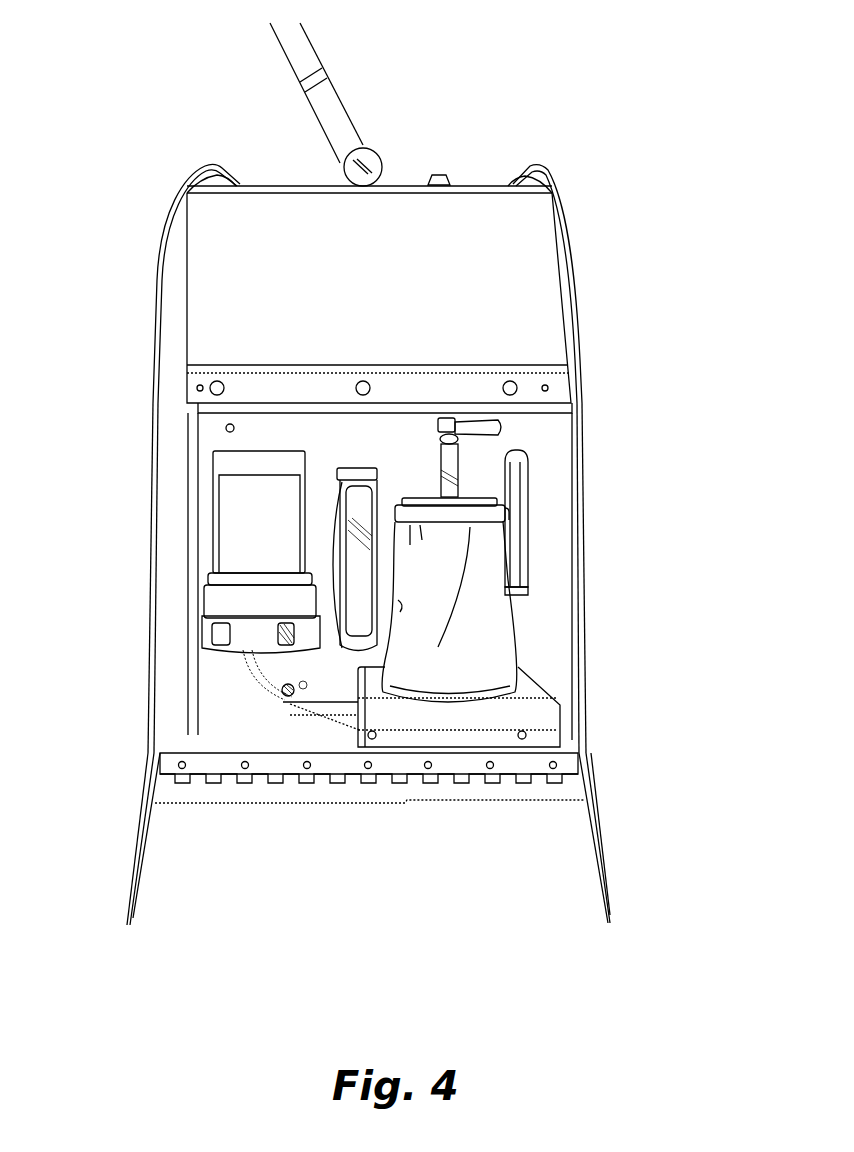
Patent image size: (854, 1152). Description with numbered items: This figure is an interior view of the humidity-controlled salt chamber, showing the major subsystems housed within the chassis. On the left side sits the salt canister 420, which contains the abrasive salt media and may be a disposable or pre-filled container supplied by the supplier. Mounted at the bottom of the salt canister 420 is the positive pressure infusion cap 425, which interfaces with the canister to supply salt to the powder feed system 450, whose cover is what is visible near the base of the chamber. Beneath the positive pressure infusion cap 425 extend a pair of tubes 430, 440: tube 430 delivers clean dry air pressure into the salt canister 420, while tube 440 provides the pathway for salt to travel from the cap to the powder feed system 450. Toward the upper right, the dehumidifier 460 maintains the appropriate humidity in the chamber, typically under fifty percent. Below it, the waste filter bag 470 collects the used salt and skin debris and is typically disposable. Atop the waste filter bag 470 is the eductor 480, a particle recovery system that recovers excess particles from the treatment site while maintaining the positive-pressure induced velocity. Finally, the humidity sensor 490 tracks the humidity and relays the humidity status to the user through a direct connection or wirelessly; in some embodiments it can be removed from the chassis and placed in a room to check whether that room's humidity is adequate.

The salt canister 420 is at (223, 505).
The positive pressure infusion cap 425 is at (220, 602).
The tube 430 is at (283, 702).
The tube 440 is at (250, 650).
The powder feed system 450 is at (460, 722).
The dehumidifier 460 is at (377, 482).
The waste filter bag 470 is at (488, 555).
The eductor 480 is at (452, 482).
The humidity sensor 490 is at (528, 578).